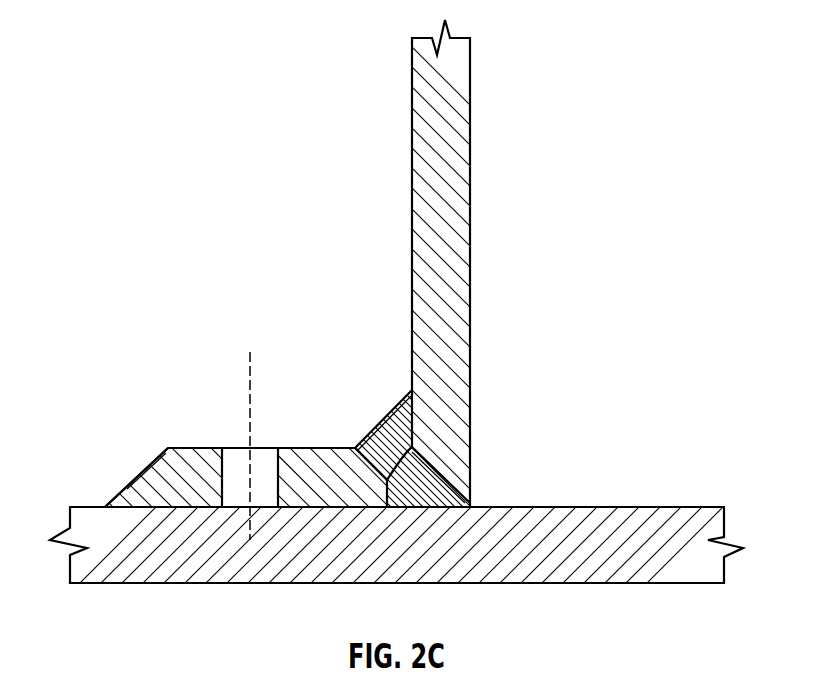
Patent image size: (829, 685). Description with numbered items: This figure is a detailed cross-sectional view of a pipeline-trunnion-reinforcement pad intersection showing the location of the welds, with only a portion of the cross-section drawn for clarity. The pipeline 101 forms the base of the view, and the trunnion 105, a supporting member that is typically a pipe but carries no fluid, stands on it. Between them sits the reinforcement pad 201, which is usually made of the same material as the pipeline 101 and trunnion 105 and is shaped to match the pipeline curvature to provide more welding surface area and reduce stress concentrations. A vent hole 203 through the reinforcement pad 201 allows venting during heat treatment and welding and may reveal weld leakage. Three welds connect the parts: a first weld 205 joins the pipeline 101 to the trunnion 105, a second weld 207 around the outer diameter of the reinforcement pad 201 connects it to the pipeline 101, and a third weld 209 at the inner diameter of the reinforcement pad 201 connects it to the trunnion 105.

The pipeline 101 is at (597, 583).
The trunnion 105 is at (471, 175).
The reinforcement pad 201 is at (193, 463).
The vent hole 203 is at (250, 378).
The first weld 205 is at (447, 490).
The second weld 207 is at (130, 490).
The third weld 209 is at (382, 420).